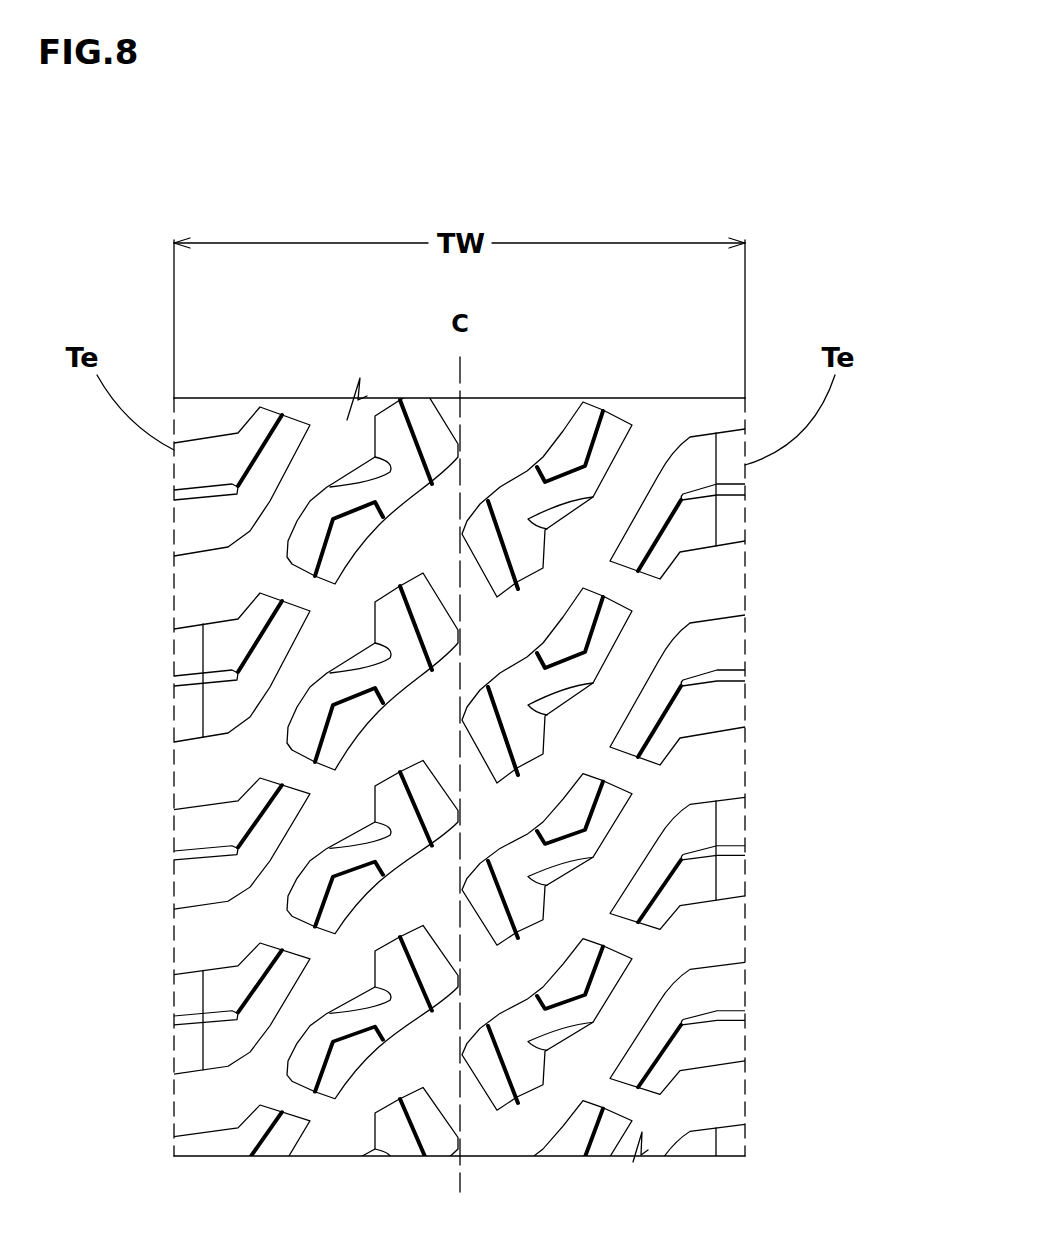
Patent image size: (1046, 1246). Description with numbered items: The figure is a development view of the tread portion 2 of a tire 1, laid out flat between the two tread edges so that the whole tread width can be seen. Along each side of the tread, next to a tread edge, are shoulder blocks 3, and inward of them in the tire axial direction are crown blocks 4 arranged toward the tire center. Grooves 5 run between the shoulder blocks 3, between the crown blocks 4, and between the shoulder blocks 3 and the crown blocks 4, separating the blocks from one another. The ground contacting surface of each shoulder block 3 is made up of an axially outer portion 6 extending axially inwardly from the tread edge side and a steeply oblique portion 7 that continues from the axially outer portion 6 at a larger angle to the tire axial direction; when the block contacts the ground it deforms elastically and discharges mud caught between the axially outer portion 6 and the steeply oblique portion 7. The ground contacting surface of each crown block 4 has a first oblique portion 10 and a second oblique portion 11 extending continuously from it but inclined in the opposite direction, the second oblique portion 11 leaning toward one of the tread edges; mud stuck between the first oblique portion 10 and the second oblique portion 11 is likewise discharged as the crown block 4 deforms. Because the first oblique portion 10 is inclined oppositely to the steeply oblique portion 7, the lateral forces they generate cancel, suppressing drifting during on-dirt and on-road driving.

The tire 1 is at (830, 286).
The tread portion 2 is at (760, 338).
The shoulder block 3 is at (216, 460).
The crown block 4 is at (387, 622).
The groove 5 is at (488, 470).
The axially outer portion 6 is at (237, 642).
The steeply oblique portion 7 is at (260, 610).
The first oblique portion 10 is at (317, 890).
The second oblique portion 11 is at (400, 802).